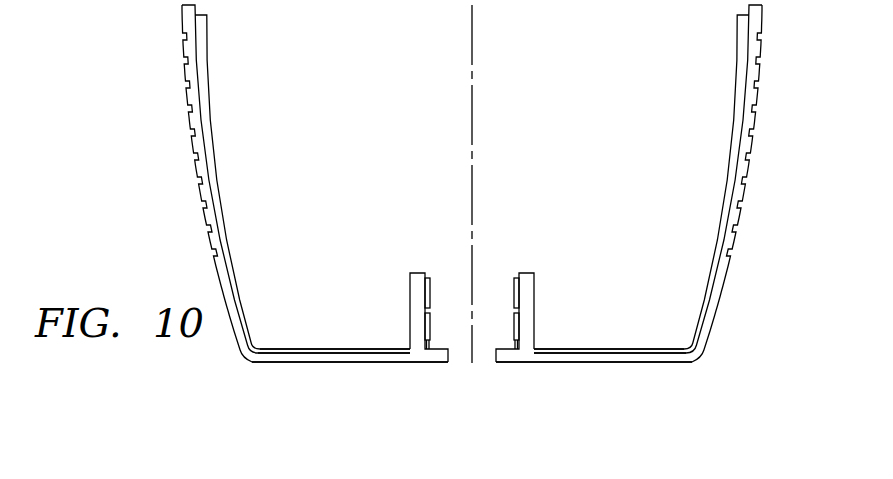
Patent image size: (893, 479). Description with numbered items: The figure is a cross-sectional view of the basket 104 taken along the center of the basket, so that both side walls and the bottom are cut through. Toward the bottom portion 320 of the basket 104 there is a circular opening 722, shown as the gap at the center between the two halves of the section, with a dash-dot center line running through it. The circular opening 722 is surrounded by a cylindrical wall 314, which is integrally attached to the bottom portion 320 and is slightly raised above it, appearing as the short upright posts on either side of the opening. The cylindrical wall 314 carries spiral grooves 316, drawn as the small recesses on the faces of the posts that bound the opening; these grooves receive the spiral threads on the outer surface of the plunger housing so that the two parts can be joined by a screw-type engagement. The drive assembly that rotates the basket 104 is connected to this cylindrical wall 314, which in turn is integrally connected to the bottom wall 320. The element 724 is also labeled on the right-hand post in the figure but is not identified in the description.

The container wall 104 is at (189, 150).
The post 314 is at (408, 312).
The protrusions 316 is at (429, 277).
The bottom wall 320 is at (410, 363).
The gap 722 is at (467, 337).
The post 724 is at (533, 320).